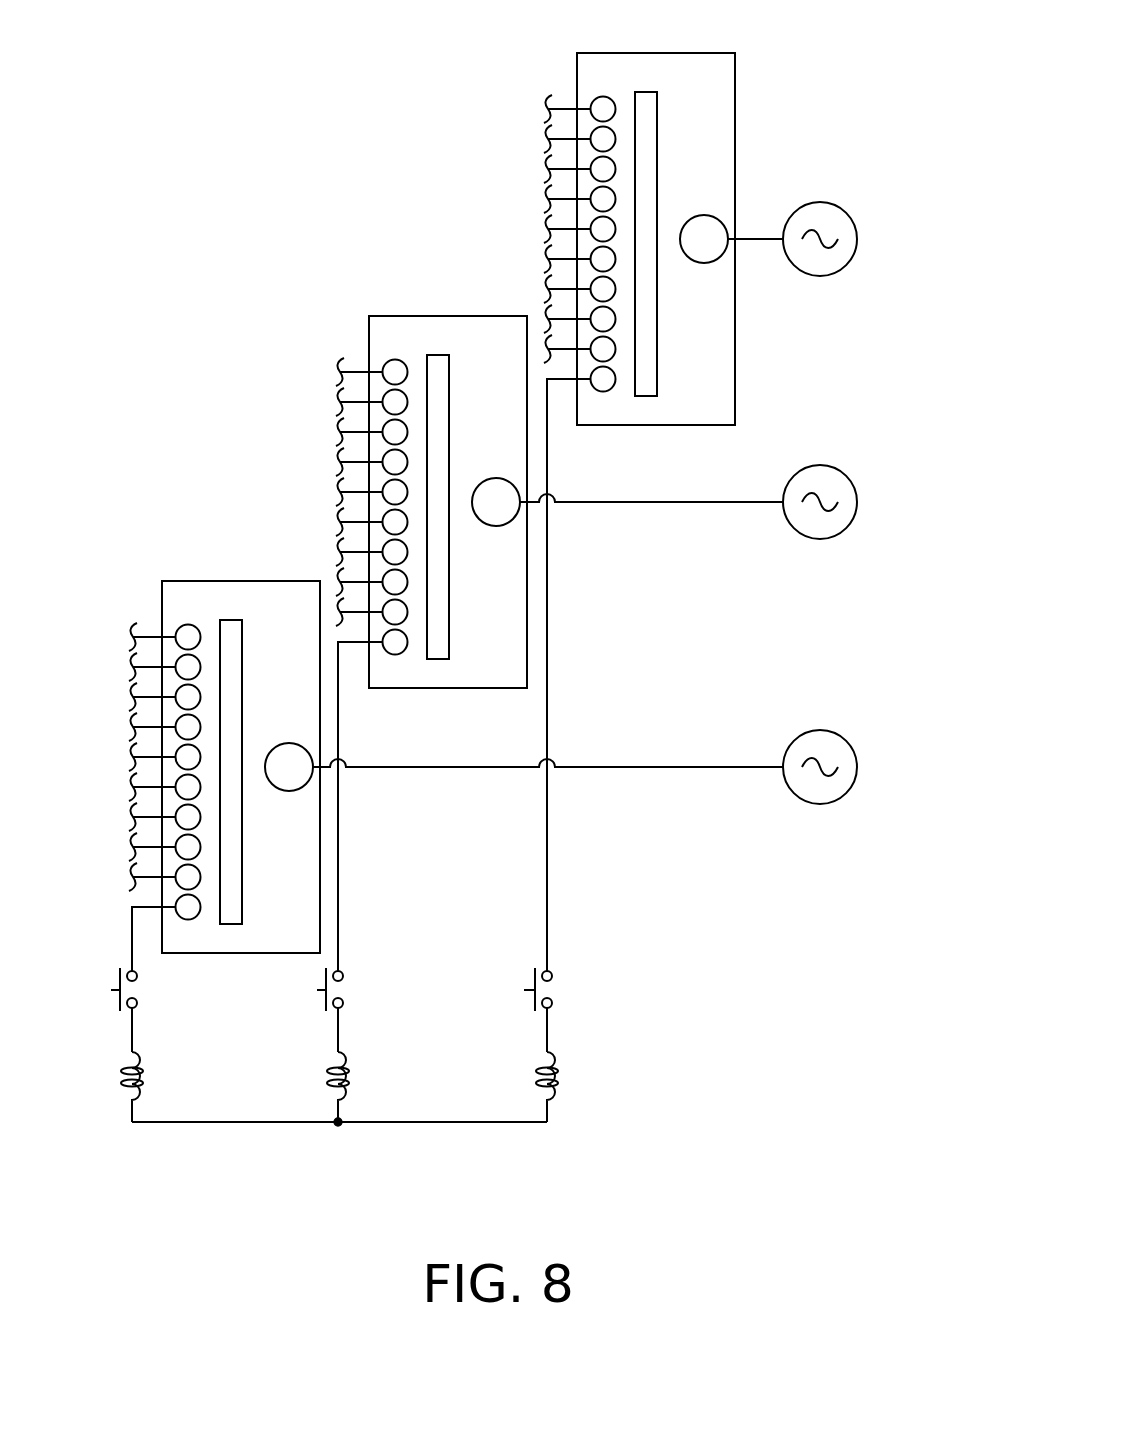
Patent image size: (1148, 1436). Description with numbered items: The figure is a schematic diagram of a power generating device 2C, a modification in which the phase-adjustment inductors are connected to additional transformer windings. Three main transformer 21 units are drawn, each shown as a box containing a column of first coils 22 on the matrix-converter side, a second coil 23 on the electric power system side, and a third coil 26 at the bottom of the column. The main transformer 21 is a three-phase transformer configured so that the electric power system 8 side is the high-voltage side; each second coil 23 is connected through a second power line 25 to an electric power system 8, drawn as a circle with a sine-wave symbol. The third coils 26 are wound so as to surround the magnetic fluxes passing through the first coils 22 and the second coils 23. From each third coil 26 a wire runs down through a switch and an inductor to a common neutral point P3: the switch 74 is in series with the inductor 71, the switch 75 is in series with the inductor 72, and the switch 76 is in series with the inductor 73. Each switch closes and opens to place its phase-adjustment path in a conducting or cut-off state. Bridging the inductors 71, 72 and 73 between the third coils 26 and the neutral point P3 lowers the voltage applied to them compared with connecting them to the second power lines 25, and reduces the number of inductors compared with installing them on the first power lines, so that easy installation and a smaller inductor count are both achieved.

The power generating device 2C is at (318, 176).
The main transformer 21 is at (270, 581).
The first coils 22 is at (188, 624).
The second coil 23 is at (289, 743).
The second power line 25 is at (760, 239).
The third coils 26 is at (188, 920).
The electric power system 8 is at (857, 239).
The inductor 71 is at (525, 1076).
The inductor 72 is at (318, 1078).
The inductor 73 is at (124, 1097).
The switch 74 is at (522, 975).
The switch 75 is at (318, 1001).
The switch 76 is at (112, 1006).
The neutral point P3 is at (338, 1128).